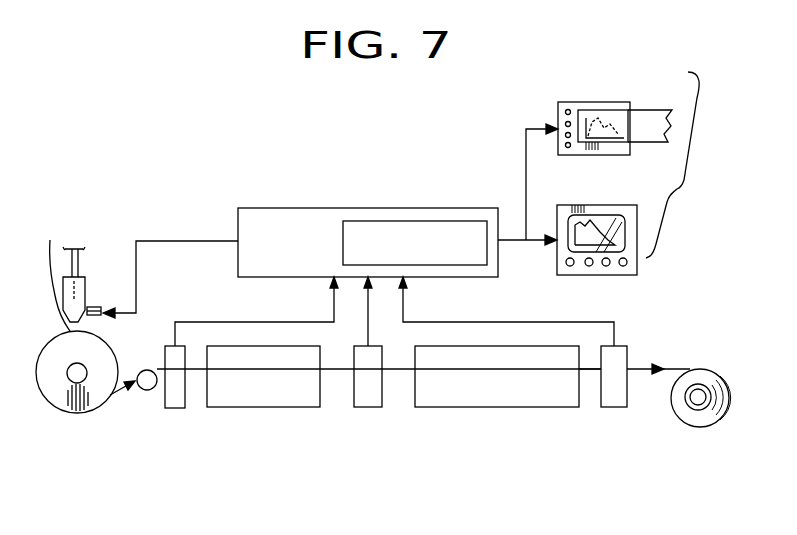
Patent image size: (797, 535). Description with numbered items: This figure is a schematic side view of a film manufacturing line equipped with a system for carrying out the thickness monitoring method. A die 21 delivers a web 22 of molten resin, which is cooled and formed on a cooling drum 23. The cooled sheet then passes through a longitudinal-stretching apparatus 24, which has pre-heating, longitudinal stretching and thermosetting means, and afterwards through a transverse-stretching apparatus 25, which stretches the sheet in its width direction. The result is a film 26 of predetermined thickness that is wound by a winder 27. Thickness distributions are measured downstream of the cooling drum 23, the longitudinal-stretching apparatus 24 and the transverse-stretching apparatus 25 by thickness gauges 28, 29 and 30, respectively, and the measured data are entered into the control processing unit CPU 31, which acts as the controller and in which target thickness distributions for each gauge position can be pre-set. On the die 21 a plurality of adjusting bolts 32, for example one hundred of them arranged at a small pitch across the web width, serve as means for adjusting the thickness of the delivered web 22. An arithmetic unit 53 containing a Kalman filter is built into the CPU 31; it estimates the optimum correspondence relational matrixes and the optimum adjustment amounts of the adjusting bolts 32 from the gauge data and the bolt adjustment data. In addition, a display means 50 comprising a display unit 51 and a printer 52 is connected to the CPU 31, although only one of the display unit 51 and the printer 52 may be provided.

The die 21 is at (90, 280).
The web of molten resin 22 is at (52, 272).
The cooling drum 23 is at (60, 398).
The longitudinal-stretching apparatus 24 is at (267, 350).
The transverse-stretching apparatus 25 is at (523, 397).
The film 26 is at (590, 371).
The winder 27 is at (684, 413).
The thickness gauge 28 is at (178, 408).
The thickness gauge 29 is at (368, 400).
The thickness gauge 30 is at (627, 350).
The control processing unit CPU 31 is at (312, 208).
The adjusting bolt 32 is at (96, 307).
The display means 50 is at (679, 165).
The display unit 51 is at (610, 205).
The printer 52 is at (611, 102).
The arithmetic unit 53 is at (443, 221).